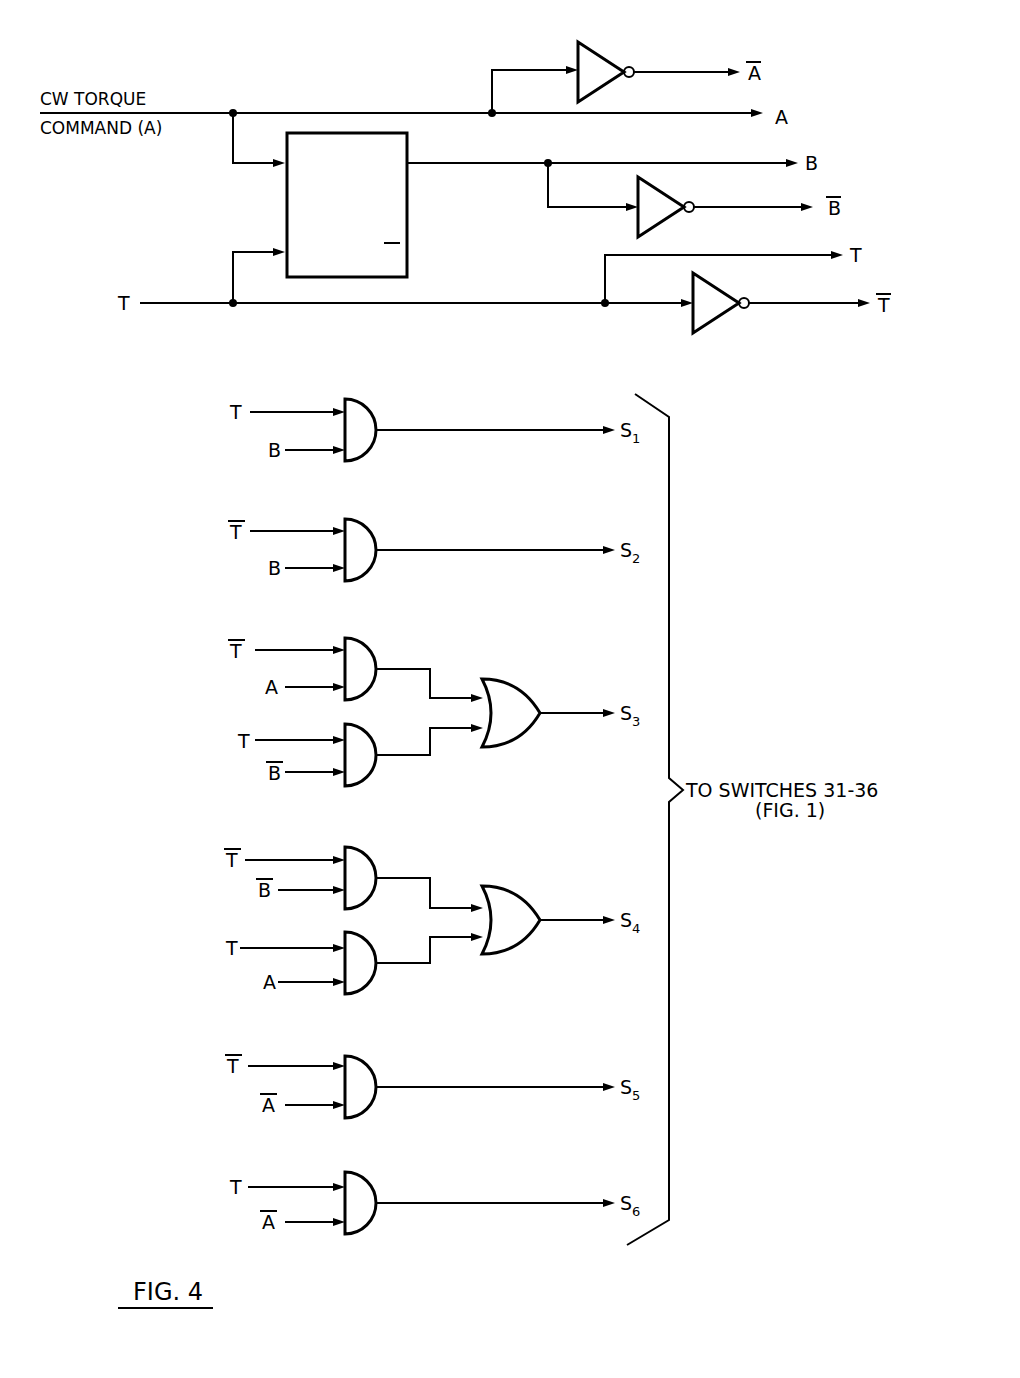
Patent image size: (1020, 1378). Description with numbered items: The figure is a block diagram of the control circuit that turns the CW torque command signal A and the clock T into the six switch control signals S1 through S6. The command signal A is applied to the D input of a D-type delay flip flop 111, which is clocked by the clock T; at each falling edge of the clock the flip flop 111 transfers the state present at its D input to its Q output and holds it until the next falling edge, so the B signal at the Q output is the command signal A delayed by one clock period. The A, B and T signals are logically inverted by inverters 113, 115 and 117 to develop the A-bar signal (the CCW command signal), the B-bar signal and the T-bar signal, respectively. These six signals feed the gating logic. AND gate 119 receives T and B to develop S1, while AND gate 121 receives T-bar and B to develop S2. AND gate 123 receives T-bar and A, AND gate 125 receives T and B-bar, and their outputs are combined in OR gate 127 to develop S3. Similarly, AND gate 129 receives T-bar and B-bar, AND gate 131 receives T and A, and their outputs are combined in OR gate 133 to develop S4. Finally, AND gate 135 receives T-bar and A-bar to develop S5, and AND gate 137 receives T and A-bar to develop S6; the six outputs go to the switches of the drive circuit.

The D-type delay flip flop 111 is at (390, 225).
The inverter 113 is at (600, 67).
The inverter 115 is at (660, 213).
The inverter 117 is at (720, 303).
The AND gate 119 is at (362, 428).
The AND gate 121 is at (362, 555).
The AND gate 123 is at (362, 662).
The AND gate 125 is at (362, 750).
The OR gate 127 is at (512, 712).
The AND gate 129 is at (360, 867).
The AND gate 131 is at (362, 967).
The OR gate 133 is at (515, 922).
The AND gate 135 is at (357, 1087).
The AND gate 137 is at (358, 1207).